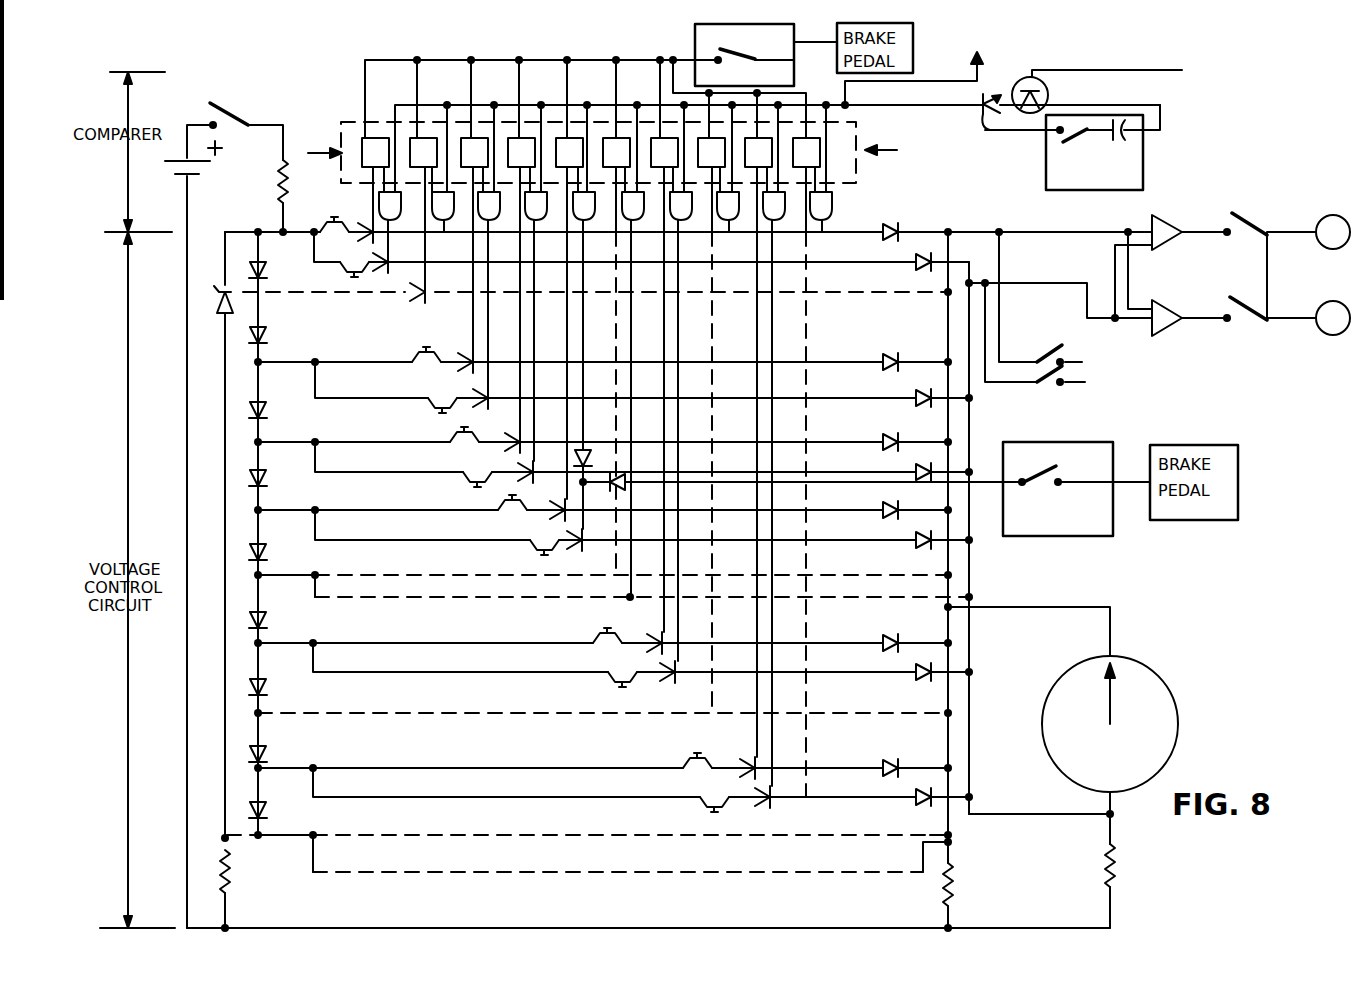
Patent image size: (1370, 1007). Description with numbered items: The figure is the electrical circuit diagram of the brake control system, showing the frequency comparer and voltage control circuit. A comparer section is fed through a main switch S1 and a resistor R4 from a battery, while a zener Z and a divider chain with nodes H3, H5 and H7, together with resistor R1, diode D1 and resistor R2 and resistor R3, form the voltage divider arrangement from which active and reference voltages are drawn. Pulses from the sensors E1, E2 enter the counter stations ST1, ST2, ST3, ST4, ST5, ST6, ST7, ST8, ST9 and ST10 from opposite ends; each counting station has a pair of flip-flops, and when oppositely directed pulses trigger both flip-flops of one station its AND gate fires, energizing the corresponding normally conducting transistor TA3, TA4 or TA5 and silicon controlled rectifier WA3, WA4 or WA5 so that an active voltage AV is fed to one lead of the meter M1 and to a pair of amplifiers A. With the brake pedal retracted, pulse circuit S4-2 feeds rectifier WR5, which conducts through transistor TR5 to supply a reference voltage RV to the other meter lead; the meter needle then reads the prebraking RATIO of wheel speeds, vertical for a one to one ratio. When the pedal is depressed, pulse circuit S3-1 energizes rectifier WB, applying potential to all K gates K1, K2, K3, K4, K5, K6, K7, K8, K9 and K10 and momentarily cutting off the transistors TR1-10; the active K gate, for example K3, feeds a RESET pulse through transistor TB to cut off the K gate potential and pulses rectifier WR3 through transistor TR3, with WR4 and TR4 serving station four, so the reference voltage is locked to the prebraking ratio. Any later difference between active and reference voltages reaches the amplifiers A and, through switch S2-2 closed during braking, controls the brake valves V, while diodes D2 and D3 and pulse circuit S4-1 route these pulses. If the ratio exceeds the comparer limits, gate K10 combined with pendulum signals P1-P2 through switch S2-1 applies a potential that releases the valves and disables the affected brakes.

The switch S1 is at (246, 126).
The resistor R4 is at (264, 196).
The sensor E1 is at (317, 166).
The sensor E2 is at (881, 161).
The zener diode Z is at (214, 535).
The resistor R1 is at (211, 883).
The diode D1 is at (268, 822).
The diode D2 is at (912, 797).
The diode D3 is at (620, 472).
The voltage divider node H3 is at (286, 354).
The voltage divider node H5 is at (286, 502).
The voltage divider node H7 is at (285, 636).
The transistor TA3 is at (365, 365).
The silicon controlled rectifier WA3 is at (690, 351).
The transistor TR3 is at (401, 387).
The silicon controlled rectifier WR3 is at (712, 405).
The transistor TA4 is at (450, 436).
The silicon controlled rectifier WA4 is at (514, 447).
The transistor TR4 is at (470, 481).
The silicon controlled rectifier WR4 is at (521, 474).
The transistor TA5 is at (500, 512).
The silicon controlled rectifier WA5 is at (737, 501).
The transistor TR5 is at (530, 548).
The silicon controlled rectifier WR5 is at (764, 555).
The resistor R2 is at (962, 884).
The resistor R3 is at (1124, 886).
The pendulums P1-P2 is at (1067, 308).
The switch S2-1 is at (1035, 348).
The switch S2-2 is at (1249, 267).
The amplifiers A is at (1167, 275).
The brake valves V is at (1333, 275).
The transistors TR1-10 is at (925, 70).
The counting station ST1 is at (375, 179).
The counting station ST2 is at (423, 209).
The counting station ST3 is at (474, 244).
The counting station ST4 is at (521, 284).
The counting station ST5 is at (569, 318).
The counting station ST6 is at (616, 356).
The counting station ST7 is at (664, 385).
The counting station ST8 is at (711, 425).
The counting station ST9 is at (758, 447).
The out-of-control station ST10 is at (806, 467).
The K gate K1 is at (390, 221).
The K gate K2 is at (443, 212).
The K gate K3 is at (489, 289).
The K gate K4 is at (536, 326).
The K gate K5 is at (584, 321).
The K gate K6 is at (633, 394).
The K gate K7 is at (681, 426).
The K gate K8 is at (728, 212).
The K gate K9 is at (774, 489).
The out-of-control AND gate K10 is at (821, 212).
The pulse circuit S4-1 is at (745, 55).
The reset pulse line RESET is at (1107, 62).
The transistor TB is at (1046, 87).
The silicon controlled rectifier WB is at (1054, 116).
The pulse circuit S3-1 is at (1079, 147).
The pulse circuit S4-2 is at (1076, 489).
The active voltage AV is at (1029, 619).
The reference voltage RV is at (1041, 817).
The meter M1 is at (1044, 709).
The rotational speed ratio RATIO is at (1112, 690).